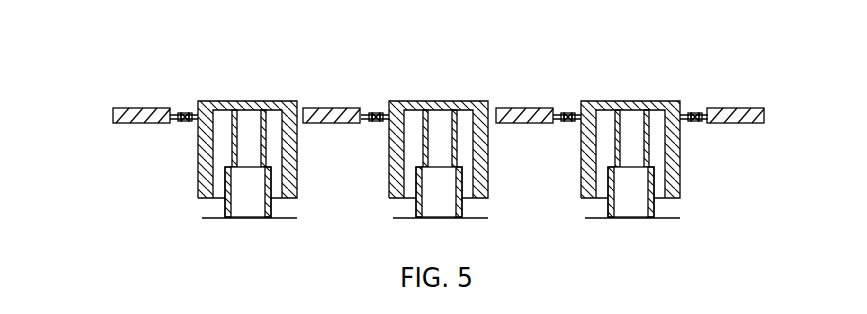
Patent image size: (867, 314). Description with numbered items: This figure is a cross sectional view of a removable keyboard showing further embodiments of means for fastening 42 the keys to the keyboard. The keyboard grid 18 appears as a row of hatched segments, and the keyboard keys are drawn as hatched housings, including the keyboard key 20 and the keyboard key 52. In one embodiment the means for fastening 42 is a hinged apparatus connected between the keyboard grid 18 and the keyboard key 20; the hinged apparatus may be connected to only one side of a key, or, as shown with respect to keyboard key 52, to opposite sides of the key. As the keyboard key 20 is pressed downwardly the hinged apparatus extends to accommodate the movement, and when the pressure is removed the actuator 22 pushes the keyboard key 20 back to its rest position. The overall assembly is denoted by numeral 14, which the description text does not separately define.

The torque tube assembly 14 is at (122, 56).
The keyboard grid 18 is at (127, 112).
The keyboard key 20 is at (286, 108).
The actuator 22 is at (443, 203).
The means for fastening 42 is at (184, 122).
The keyboard key 52 is at (607, 108).